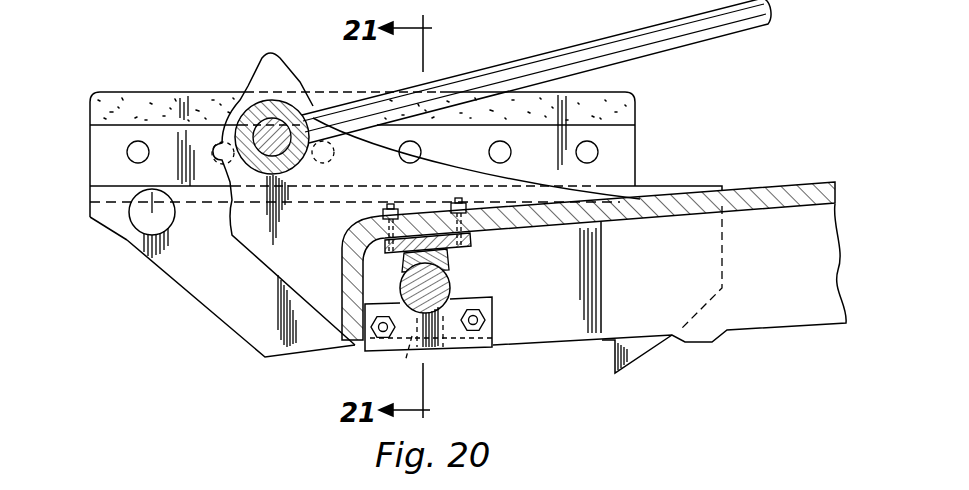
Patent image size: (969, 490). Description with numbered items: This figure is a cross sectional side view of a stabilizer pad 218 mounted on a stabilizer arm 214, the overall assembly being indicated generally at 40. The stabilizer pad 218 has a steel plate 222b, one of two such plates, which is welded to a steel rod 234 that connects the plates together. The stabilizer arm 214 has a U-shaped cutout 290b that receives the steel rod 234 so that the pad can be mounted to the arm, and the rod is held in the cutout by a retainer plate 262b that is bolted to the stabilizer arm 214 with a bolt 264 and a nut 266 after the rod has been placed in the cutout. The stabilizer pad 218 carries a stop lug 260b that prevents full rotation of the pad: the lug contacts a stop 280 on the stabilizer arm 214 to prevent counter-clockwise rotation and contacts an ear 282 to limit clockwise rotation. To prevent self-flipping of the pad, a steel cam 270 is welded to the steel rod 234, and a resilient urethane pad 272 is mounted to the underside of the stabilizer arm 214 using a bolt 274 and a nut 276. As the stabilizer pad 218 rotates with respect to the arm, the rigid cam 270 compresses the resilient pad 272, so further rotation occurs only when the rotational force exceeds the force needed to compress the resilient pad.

The apparatus frame 40 is at (100, 92).
The stabilizer pad 218 is at (148, 66).
The ear 282 is at (267, 50).
The stop lug 260b is at (133, 224).
The steel plate 222b is at (680, 184).
The stabilizer arm 214 is at (783, 182).
The bolt 274 is at (389, 206).
The nut 276 is at (383, 214).
The resilient urethane pad 272 is at (471, 239).
The steel cam 270 is at (449, 258).
The steel rod 234 is at (457, 284).
The retainer plate 262b is at (450, 350).
The bolt 264 is at (372, 335).
The nut 266 is at (383, 333).
The U-shaped cutout 290b is at (407, 358).
The stop 280 is at (712, 343).